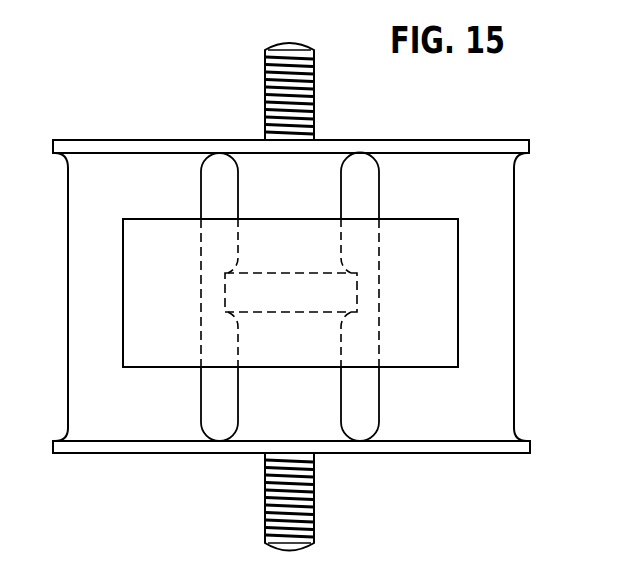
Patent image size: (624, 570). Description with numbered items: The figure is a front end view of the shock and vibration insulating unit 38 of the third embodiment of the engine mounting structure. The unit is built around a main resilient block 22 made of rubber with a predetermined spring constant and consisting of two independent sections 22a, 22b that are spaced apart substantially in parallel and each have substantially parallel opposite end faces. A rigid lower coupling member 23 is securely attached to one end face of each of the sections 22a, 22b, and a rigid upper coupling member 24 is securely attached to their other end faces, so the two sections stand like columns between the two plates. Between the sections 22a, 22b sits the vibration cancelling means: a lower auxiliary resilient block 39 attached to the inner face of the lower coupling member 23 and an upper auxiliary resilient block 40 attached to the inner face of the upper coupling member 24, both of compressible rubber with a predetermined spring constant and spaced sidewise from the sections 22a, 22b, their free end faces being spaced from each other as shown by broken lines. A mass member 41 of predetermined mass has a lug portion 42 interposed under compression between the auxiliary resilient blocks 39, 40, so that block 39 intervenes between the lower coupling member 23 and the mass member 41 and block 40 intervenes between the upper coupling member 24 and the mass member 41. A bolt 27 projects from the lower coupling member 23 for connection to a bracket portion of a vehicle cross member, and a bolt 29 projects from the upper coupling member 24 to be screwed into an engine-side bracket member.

The shock and vibration insulating unit 38 is at (387, 107).
The upper coupling member 24 is at (159, 140).
The lower coupling member 23 is at (138, 455).
The main resilient block 22 is at (67, 365).
The section of main resilient block 22a is at (68, 260).
The section of main resilient block 22b is at (514, 207).
The bolt 29 is at (314, 72).
The bolt 27 is at (314, 497).
The mass member 41 is at (458, 303).
The upper auxiliary resilient block 40 is at (236, 187).
The lower auxiliary resilient block 39 is at (237, 402).
The lug portion 42 is at (323, 272).